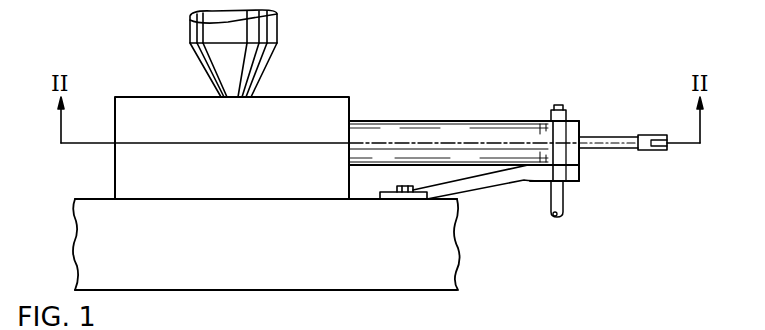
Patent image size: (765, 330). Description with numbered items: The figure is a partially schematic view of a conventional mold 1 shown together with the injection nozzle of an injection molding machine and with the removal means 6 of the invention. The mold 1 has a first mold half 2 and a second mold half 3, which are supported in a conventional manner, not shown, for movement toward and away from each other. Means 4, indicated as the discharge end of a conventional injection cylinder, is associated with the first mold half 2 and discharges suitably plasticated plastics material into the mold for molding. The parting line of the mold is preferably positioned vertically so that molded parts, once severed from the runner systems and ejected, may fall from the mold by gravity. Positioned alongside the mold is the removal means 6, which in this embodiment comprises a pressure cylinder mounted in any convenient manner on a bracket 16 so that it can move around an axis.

The mold 1 is at (275, 93).
The first mold half 2 is at (316, 186).
The second mold half 3 is at (323, 112).
The means for discharging plasticated plastics material 4 is at (258, 32).
The removal means 6 is at (438, 121).
The bracket 16 is at (503, 182).